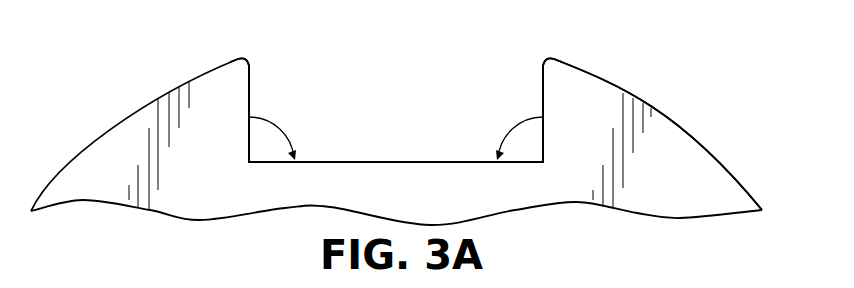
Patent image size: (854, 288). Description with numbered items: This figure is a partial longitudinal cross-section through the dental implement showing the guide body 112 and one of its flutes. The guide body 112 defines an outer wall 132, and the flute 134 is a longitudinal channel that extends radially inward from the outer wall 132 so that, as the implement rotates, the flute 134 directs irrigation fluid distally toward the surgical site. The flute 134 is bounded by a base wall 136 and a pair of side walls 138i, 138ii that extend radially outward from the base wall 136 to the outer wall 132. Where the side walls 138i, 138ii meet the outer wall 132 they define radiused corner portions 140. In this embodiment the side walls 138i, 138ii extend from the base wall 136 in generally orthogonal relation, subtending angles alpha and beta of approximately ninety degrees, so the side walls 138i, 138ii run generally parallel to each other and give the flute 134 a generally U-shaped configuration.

The guide body 112 is at (752, 143).
The outer wall 132 is at (676, 123).
The flute 134 is at (413, 123).
The base wall 136 is at (352, 161).
The first side wall 138i is at (250, 86).
The second side wall 138ii is at (543, 85).
The radiused corner portions 140 is at (247, 60).